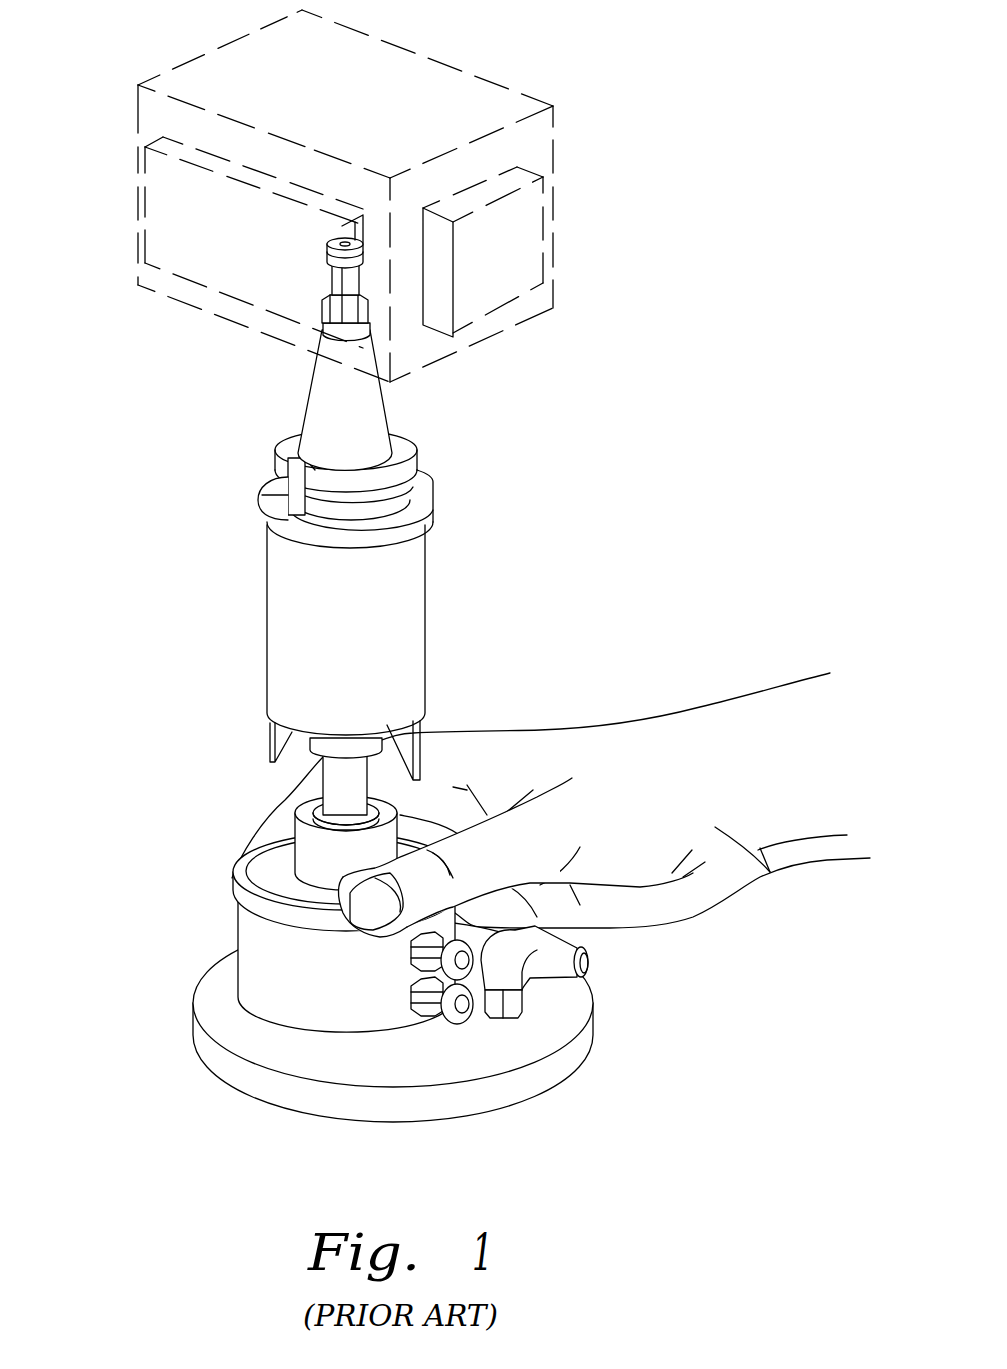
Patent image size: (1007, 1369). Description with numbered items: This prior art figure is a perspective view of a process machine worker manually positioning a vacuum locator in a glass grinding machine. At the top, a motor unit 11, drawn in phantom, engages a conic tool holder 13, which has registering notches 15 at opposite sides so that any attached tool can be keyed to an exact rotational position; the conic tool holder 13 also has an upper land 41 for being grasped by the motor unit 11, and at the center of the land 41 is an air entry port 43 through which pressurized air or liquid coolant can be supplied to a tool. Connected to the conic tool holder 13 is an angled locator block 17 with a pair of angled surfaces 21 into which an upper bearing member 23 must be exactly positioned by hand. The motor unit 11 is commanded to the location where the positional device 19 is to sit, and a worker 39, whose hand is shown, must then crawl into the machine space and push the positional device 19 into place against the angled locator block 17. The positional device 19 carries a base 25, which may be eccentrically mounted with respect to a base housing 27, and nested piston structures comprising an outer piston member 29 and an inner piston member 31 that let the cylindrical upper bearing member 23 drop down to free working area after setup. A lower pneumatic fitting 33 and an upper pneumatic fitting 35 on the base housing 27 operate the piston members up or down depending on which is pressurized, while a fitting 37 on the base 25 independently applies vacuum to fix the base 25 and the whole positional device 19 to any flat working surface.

The motor unit 11 is at (473, 93).
The conic tool holder 13 is at (377, 412).
The registering notches 15 is at (402, 442).
The angled locator block 17 is at (410, 628).
The positional device 19 is at (382, 962).
The angled surfaces 21 is at (400, 743).
The upper bearing member 23 is at (322, 758).
The base 25 is at (517, 1045).
The base housing 27 is at (237, 933).
The outer piston member 29 is at (250, 888).
The inner piston member 31 is at (360, 782).
The lower pneumatic fitting 33 is at (423, 997).
The upper pneumatic fitting 35 is at (425, 950).
The fitting 37 is at (508, 973).
The worker 39 is at (730, 722).
The upper land 41 is at (327, 259).
The air entry port 43 is at (345, 243).